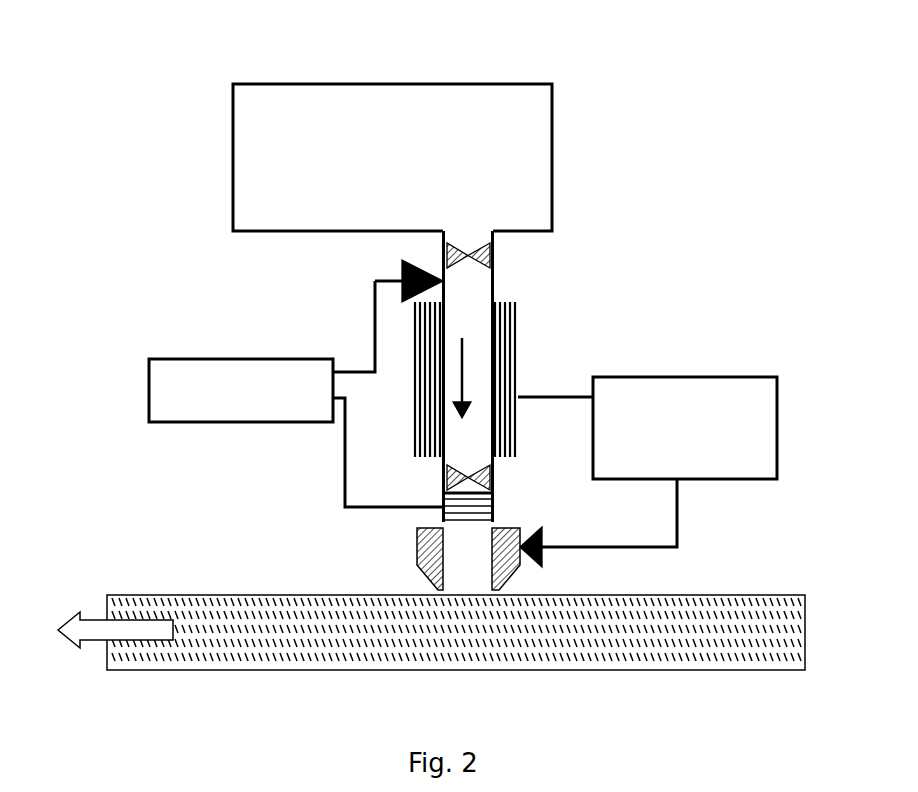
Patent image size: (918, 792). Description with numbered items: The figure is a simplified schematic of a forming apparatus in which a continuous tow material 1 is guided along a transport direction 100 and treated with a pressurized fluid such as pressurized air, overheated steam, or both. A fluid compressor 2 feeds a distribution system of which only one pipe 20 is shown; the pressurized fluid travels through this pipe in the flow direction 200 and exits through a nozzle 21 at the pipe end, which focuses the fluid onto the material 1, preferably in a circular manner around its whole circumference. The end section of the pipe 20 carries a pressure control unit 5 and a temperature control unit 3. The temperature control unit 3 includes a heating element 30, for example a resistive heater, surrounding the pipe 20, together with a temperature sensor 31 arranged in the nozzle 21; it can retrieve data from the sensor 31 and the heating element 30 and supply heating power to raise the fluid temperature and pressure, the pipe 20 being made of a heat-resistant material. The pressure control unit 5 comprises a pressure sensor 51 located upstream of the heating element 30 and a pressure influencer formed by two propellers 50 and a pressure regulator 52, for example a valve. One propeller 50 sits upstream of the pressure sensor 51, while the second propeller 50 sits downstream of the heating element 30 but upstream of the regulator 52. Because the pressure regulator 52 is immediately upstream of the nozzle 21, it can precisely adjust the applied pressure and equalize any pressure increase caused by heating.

The continuous material 1 is at (217, 645).
The fluid compressor 2 is at (513, 103).
The temperature control unit 3 is at (695, 399).
The pressure control unit 5 is at (170, 388).
The pipe 20 is at (493, 288).
The nozzle 21 is at (417, 542).
The heating element 30 is at (507, 315).
The temperature sensor 31 is at (538, 565).
The propeller 50 is at (482, 252).
The pressure sensor 51 is at (402, 271).
The pressure regulator 52 is at (420, 565).
The transport direction 100 is at (93, 628).
The flow direction 200 is at (460, 380).